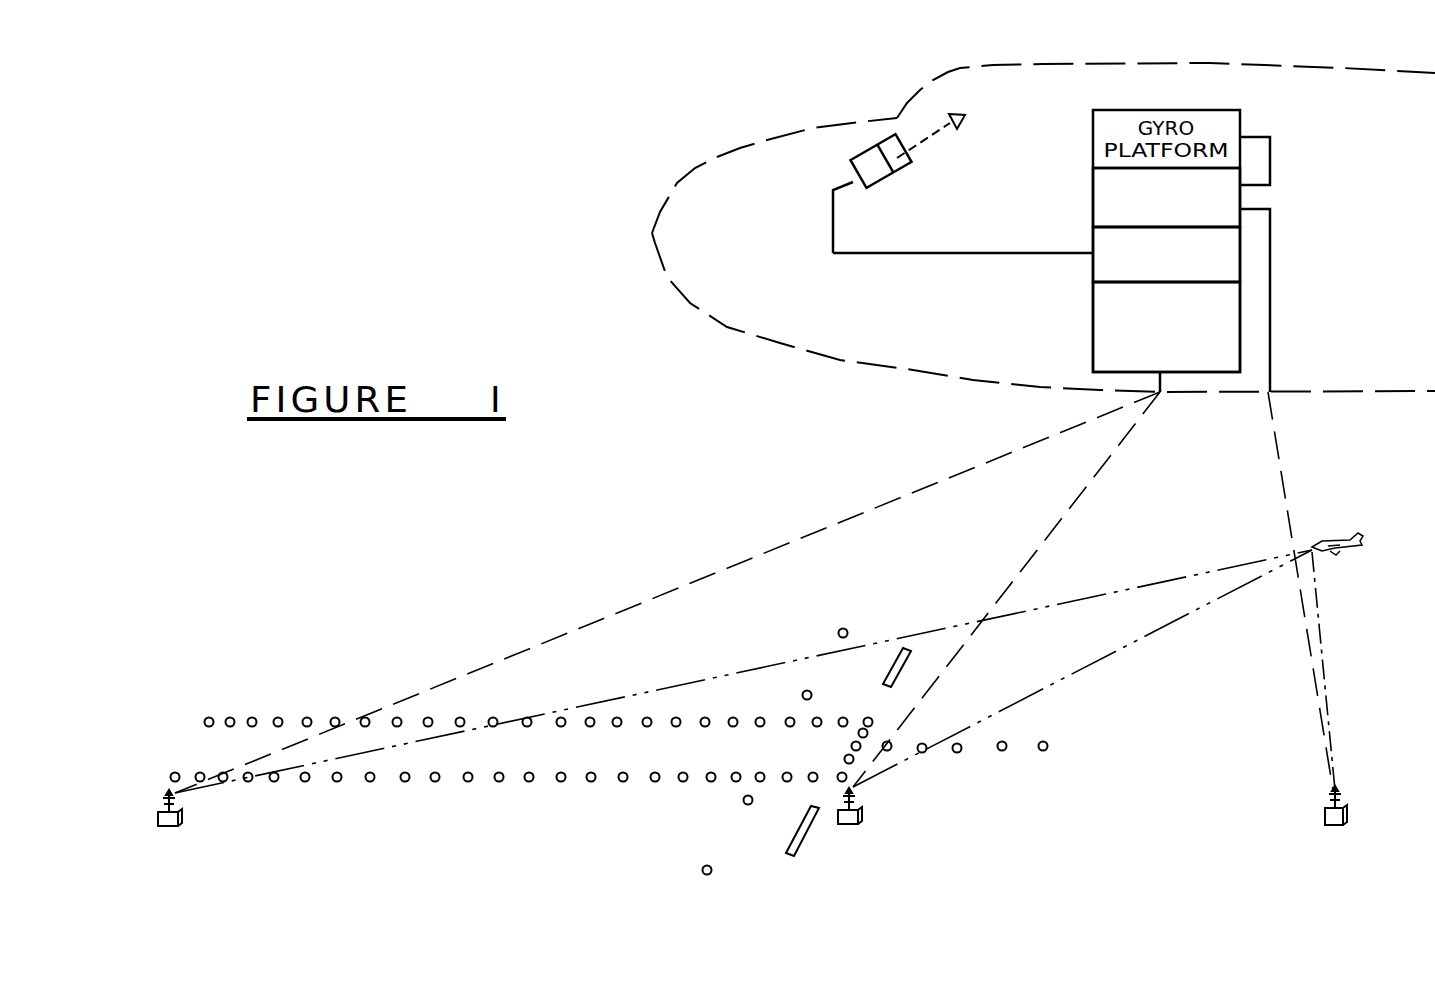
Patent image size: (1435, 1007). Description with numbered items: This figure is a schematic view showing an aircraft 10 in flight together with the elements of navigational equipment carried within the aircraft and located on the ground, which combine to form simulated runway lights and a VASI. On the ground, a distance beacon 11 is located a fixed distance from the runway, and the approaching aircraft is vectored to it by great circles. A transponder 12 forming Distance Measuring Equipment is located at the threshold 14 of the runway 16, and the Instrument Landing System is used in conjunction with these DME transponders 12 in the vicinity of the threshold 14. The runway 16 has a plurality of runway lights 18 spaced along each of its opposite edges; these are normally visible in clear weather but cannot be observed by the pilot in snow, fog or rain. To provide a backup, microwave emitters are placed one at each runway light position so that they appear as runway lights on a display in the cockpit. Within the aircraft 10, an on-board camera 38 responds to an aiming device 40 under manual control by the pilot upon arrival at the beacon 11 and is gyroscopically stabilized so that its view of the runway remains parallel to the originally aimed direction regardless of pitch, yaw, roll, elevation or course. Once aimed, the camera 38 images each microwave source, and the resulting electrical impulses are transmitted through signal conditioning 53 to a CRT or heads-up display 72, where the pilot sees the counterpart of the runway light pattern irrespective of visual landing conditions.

The aircraft 10 is at (1337, 393).
The distance beacon 11 is at (1325, 812).
The transponder 12 is at (182, 813).
The threshold 14 is at (856, 755).
The runway 16 is at (260, 742).
The runway lights 18 is at (591, 783).
The camera 38 is at (1093, 325).
The aiming device 40 is at (1093, 193).
The signal conditioning 53 is at (1093, 268).
The CRT or heads-up display 72 is at (873, 160).